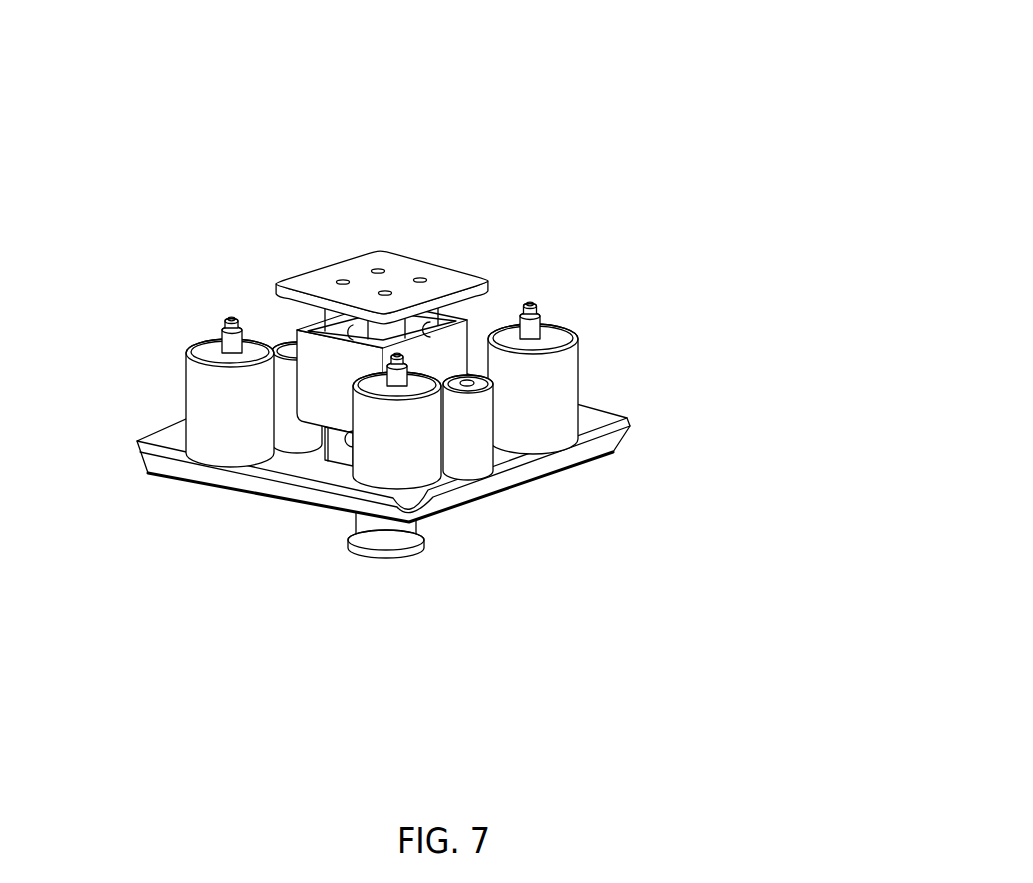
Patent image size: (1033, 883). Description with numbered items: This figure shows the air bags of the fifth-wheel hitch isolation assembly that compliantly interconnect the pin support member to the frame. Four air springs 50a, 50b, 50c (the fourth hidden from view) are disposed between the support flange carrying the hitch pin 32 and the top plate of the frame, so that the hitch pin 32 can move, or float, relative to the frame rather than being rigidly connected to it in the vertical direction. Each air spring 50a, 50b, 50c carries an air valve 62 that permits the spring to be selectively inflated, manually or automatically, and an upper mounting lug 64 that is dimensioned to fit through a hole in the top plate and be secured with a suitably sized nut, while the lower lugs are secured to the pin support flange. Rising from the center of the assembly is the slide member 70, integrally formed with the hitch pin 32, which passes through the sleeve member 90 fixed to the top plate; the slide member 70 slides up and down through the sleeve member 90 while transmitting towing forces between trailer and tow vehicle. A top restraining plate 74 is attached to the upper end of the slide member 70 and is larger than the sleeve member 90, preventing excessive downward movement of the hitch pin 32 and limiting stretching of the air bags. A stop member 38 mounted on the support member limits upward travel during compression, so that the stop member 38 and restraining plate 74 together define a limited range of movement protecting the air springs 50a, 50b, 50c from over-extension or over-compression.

The hitch pin 32 is at (382, 532).
The stop member 38 is at (477, 430).
The air spring 50a is at (228, 408).
The air spring 50b is at (407, 438).
The air spring 50c is at (550, 374).
The air valve 62 is at (230, 321).
The upper mounting lug 64 is at (230, 344).
The slide member 70 is at (388, 337).
The top restraining plate 74 is at (445, 269).
The sleeve member 90 is at (336, 388).